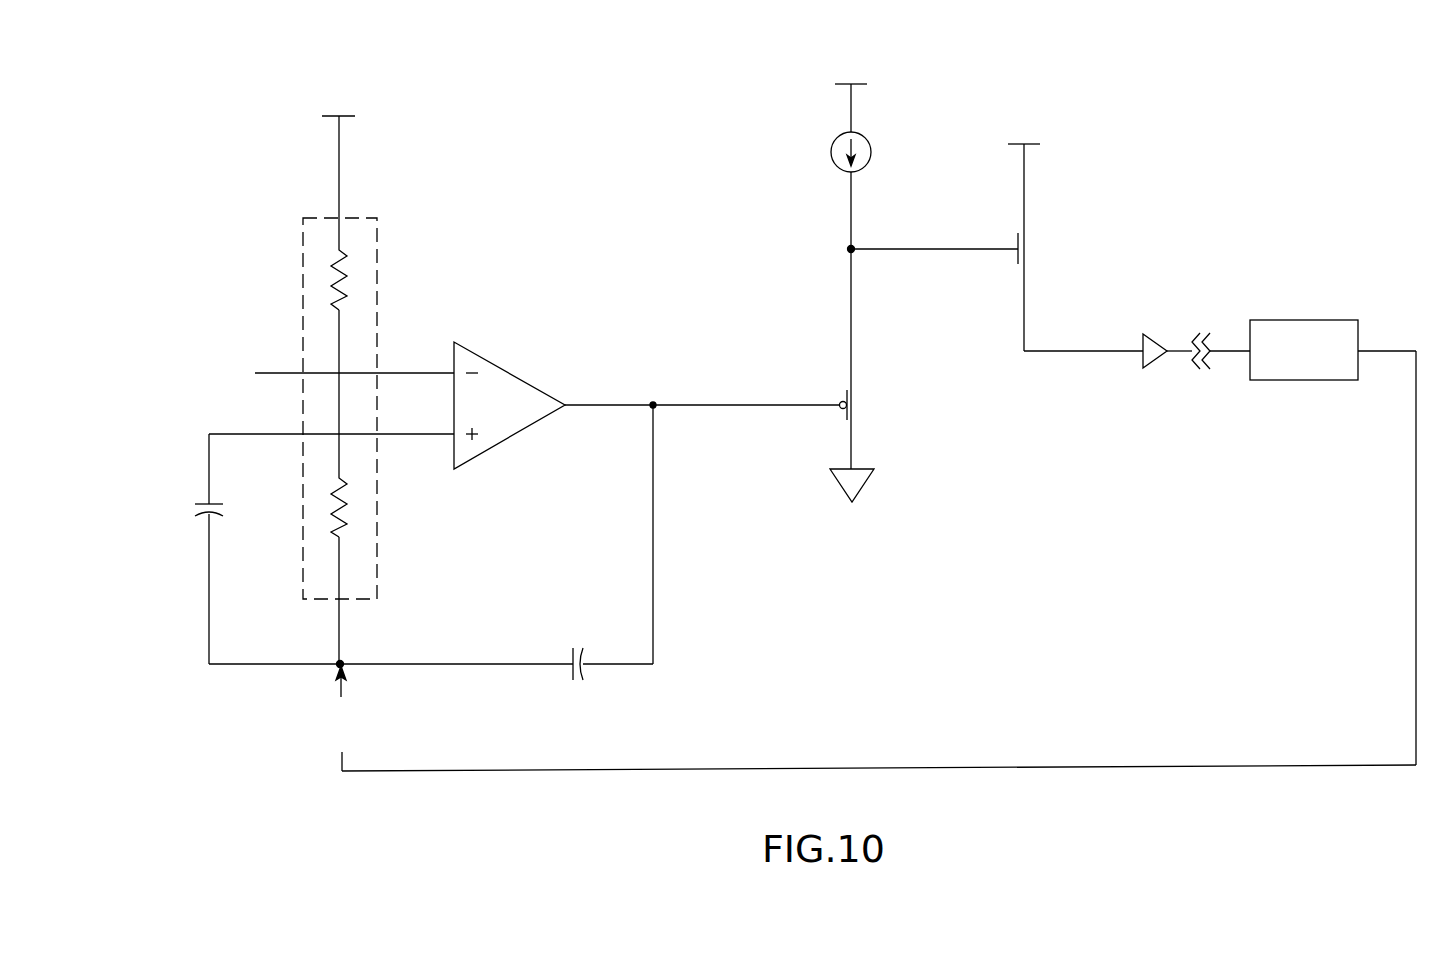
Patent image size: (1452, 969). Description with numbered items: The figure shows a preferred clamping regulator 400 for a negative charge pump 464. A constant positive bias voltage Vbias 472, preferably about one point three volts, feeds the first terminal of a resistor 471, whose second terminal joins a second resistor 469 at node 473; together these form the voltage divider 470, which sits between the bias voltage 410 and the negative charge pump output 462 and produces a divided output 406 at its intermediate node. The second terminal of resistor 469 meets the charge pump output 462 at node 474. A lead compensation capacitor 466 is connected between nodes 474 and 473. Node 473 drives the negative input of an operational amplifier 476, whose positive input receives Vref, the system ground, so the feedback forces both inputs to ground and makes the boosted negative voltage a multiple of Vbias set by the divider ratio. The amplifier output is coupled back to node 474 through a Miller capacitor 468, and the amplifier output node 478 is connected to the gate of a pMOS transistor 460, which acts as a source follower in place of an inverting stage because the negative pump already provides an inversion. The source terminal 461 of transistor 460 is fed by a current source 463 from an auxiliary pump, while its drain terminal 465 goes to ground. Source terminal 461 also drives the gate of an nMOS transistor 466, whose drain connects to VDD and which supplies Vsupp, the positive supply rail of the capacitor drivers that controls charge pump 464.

The voltage divider network 400 is at (339, 183).
The divided output 406 is at (413, 436).
The constant bias voltage 410 is at (416, 368).
The pMOS transistor 460 is at (843, 400).
The source terminal 461 is at (848, 248).
The output of charge pump 462 is at (1081, 355).
The current source 463 is at (872, 152).
The charge pump 464 is at (1317, 320).
The drain terminal 465 is at (853, 447).
The capacitor / nMOS transistor 466 is at (196, 502).
The second capacitor 468 is at (572, 655).
The second resistor 469 is at (339, 510).
The voltage divider 470 is at (303, 583).
The resistor 471 is at (339, 283).
The constant bias voltage Vbias 472 is at (385, 103).
The node 473 is at (339, 402).
The node 474 is at (343, 660).
The operational amplifier 476 is at (514, 435).
The node 478 is at (655, 402).